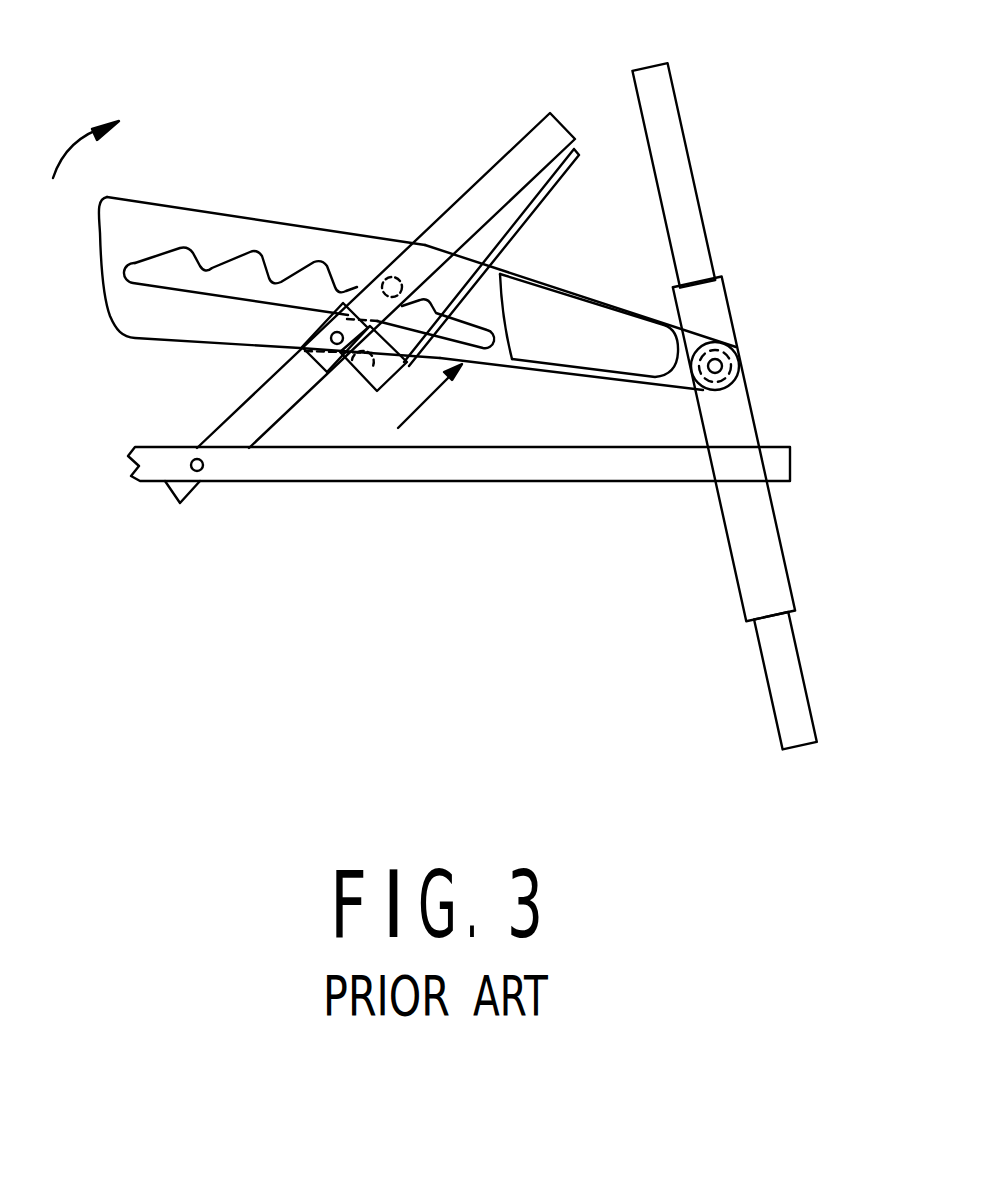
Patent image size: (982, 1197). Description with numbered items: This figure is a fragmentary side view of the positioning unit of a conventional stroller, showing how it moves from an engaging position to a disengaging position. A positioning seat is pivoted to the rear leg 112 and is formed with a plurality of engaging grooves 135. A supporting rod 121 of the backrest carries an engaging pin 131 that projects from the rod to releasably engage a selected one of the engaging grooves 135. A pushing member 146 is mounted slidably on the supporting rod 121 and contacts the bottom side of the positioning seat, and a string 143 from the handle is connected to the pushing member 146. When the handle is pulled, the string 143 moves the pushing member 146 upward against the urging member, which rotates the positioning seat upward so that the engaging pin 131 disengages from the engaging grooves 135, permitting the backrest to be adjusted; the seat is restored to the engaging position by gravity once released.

The rear leg 112 is at (668, 145).
The supporting rod 121 is at (257, 413).
The engaging pin 131 is at (405, 278).
The engaging grooves 135 is at (187, 252).
The string 143 is at (508, 222).
The pushing member 146 is at (330, 375).